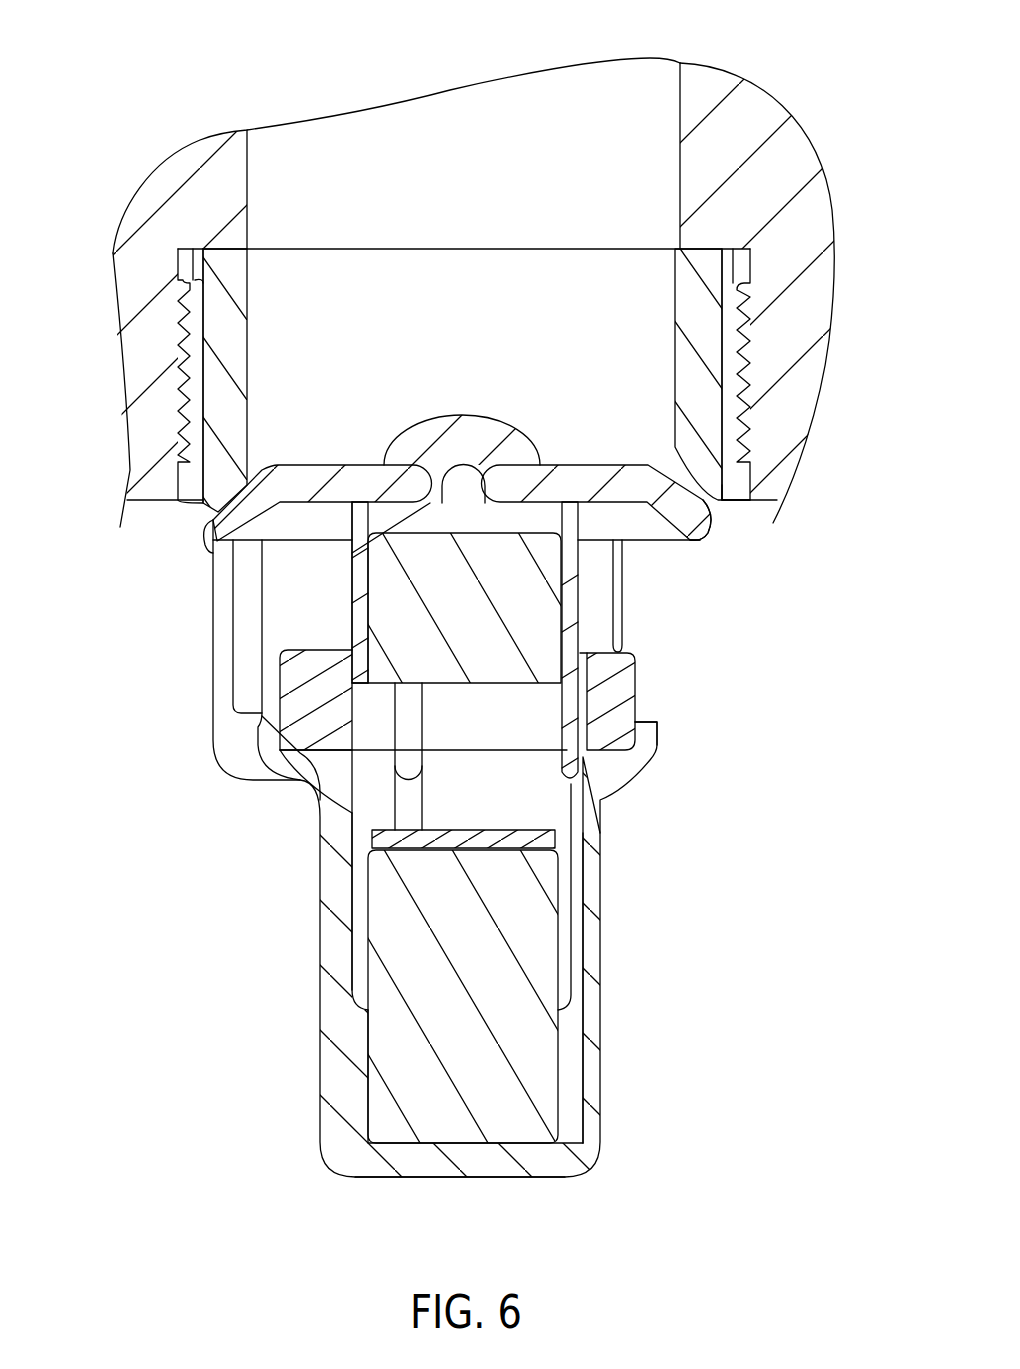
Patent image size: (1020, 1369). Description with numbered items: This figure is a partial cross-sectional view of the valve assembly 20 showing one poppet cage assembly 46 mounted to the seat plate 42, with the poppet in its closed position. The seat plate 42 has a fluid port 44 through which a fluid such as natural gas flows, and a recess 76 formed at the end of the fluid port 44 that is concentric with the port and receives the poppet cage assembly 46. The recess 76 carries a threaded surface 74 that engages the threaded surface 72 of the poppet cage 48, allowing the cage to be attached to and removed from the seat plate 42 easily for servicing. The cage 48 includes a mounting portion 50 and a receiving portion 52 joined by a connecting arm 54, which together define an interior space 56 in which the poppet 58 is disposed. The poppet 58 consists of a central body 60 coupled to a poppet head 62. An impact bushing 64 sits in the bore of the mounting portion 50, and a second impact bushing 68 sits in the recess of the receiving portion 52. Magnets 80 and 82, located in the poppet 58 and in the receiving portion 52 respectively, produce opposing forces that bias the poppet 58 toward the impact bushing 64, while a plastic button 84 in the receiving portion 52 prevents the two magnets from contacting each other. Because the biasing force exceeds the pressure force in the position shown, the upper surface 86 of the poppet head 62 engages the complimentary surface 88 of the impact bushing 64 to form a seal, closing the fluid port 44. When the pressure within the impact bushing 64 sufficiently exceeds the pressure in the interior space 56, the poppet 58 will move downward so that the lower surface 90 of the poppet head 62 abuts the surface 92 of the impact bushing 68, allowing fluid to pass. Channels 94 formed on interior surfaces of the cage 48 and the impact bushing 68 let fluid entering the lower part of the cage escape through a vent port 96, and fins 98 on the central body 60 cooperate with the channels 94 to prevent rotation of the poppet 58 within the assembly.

The valve assembly 20 is at (92, 165).
The seat plate 42 is at (150, 359).
The fluid port 44 is at (678, 80).
The poppet cage assembly 46 is at (205, 870).
The poppet cage 48 is at (660, 757).
The mounting portion 50 is at (735, 488).
The receiving portion 52 is at (345, 1075).
The connecting arm 54 is at (220, 622).
The interior space 56 is at (268, 648).
The poppet 58 is at (318, 610).
The central body 60 is at (572, 640).
The poppet head 62 is at (215, 541).
The impact bushing 64 is at (693, 297).
The impact bushing 68 is at (623, 695).
The threaded surface 72 is at (178, 455).
The threaded surface 74 is at (190, 392).
The recess 76 is at (745, 268).
The magnet 80 is at (464, 608).
The magnet 82 is at (463, 996).
The button 84 is at (413, 843).
The upper surface 86 is at (687, 483).
The complimentary surface 88 is at (705, 532).
The lower surface 90 is at (660, 542).
The surface 92 is at (603, 648).
The channel 94 is at (407, 813).
The vent port 96 is at (565, 1153).
The fin 98 is at (393, 775).